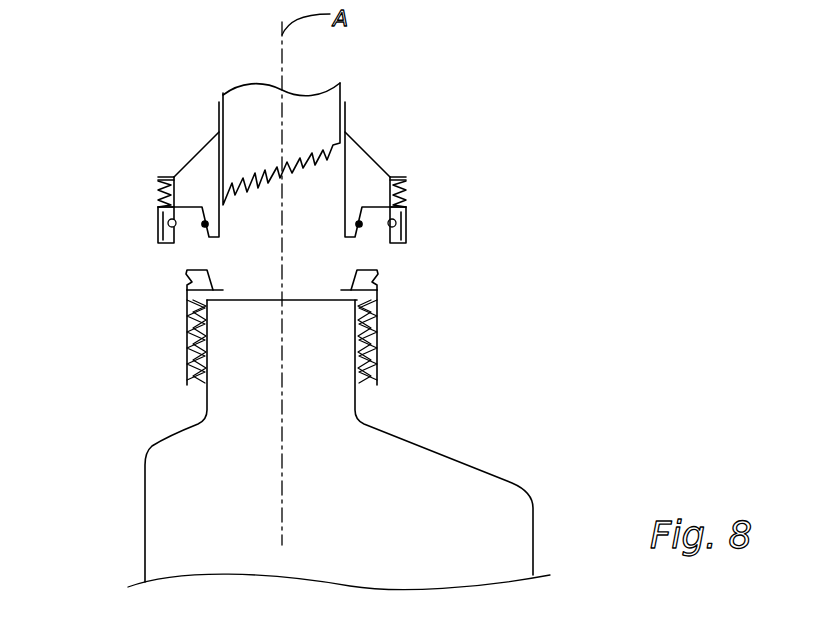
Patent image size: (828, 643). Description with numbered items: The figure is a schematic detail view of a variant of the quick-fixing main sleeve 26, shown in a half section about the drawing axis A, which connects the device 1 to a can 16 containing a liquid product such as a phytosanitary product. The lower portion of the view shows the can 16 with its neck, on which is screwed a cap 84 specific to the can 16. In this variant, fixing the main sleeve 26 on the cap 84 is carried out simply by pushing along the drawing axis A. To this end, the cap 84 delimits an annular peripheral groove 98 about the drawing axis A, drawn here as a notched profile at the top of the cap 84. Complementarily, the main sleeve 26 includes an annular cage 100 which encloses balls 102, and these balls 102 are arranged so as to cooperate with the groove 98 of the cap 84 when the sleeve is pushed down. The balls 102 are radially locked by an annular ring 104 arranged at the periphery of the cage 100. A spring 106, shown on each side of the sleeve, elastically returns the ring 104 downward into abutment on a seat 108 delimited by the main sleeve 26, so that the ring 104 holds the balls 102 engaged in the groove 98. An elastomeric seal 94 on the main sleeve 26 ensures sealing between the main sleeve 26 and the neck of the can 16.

The dispensing device 1 is at (190, 114).
The main sleeve 26 is at (386, 102).
The elastomeric seal 94 is at (203, 228).
The spring 106 is at (404, 190).
The annular ring 104 is at (400, 220).
The balls 102 is at (400, 226).
The seat 108 is at (397, 244).
The annular cage 100 is at (387, 232).
The cap 84 is at (177, 298).
The annular peripheral groove 98 is at (374, 279).
The can 16 is at (118, 452).